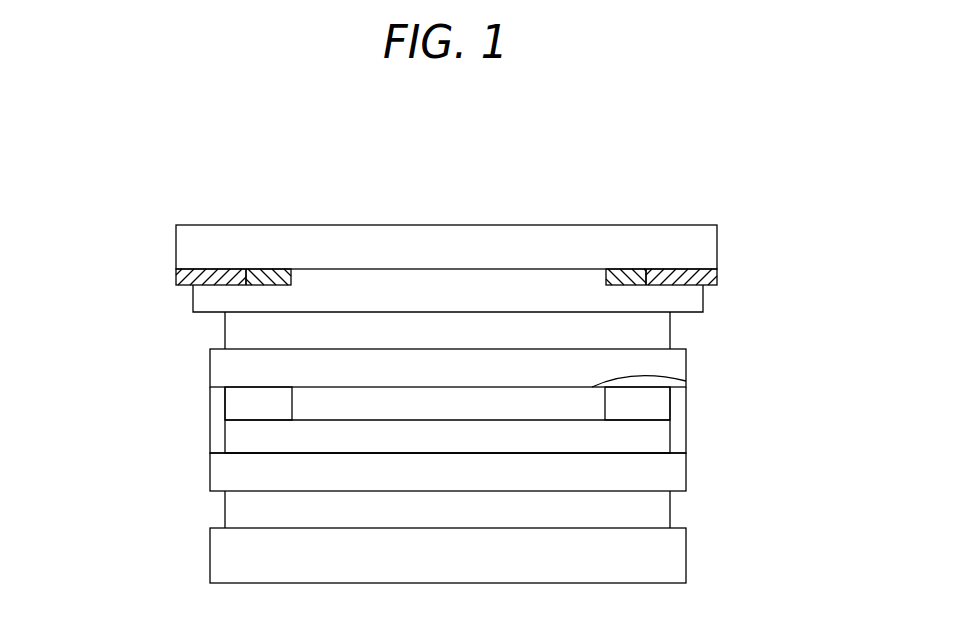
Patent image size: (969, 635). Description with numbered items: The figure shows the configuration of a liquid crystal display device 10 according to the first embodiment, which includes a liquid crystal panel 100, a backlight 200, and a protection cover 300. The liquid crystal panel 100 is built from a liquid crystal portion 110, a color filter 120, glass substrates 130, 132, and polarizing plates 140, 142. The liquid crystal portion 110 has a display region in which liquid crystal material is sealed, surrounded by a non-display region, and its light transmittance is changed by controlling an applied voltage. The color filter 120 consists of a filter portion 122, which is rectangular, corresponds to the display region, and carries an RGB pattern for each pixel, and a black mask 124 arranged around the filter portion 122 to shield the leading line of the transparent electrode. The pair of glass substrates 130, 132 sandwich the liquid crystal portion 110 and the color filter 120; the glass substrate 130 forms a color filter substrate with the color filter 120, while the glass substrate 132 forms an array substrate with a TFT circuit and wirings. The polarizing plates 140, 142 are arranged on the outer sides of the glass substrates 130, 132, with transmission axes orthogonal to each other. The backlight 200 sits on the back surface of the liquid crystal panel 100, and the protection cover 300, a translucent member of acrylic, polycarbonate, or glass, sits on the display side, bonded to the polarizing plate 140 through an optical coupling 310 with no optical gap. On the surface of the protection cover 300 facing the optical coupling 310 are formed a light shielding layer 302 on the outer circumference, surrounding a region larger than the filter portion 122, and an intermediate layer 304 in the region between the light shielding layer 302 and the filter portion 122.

The liquid crystal display device 10 is at (648, 203).
The liquid crystal panel 100 is at (477, 416).
The liquid crystal portion 110 is at (672, 438).
The color filter 120 is at (672, 414).
The filter portion 122 is at (686, 381).
The black mask 124 is at (670, 402).
The glass substrate 130 is at (686, 362).
The glass substrate 132 is at (687, 478).
The polarizing plate 140 is at (670, 328).
The polarizing plate 142 is at (670, 517).
The backlight 200 is at (210, 560).
The protection cover 300 is at (176, 245).
The light shielding layer 302 is at (176, 273).
The intermediate layer 304 is at (270, 269).
The optical coupling 310 is at (193, 301).